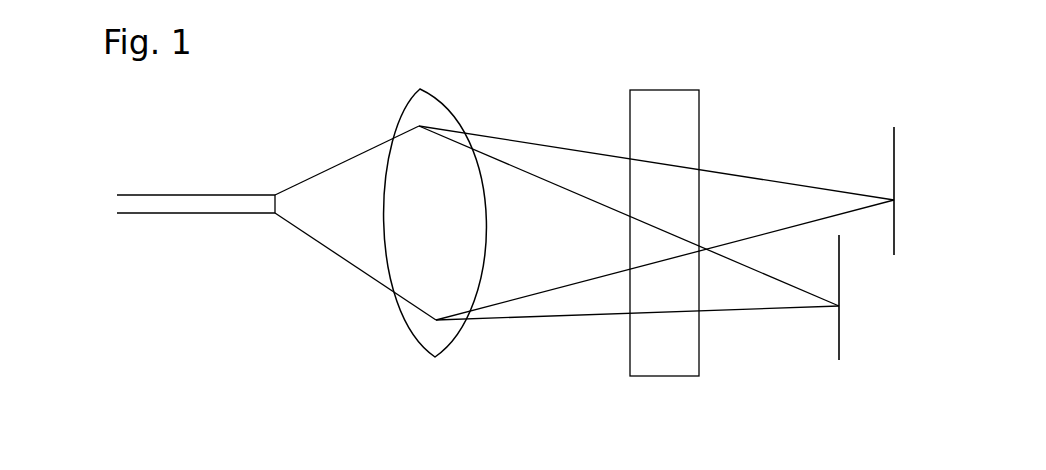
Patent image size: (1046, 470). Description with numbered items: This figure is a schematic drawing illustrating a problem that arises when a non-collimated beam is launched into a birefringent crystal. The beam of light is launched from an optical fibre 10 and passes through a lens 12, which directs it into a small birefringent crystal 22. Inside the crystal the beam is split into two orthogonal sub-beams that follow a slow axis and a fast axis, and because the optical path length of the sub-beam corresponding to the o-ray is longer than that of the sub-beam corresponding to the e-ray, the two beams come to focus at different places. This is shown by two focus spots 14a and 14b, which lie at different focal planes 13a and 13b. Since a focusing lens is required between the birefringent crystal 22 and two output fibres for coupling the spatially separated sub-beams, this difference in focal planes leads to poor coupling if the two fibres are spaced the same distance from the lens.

The optical fibre 10 is at (170, 203).
The lens 12 is at (416, 327).
The birefringent crystal 22 is at (660, 362).
The focus spot 14a is at (893, 198).
The focus spot 14b is at (836, 308).
The focal plane 13a is at (903, 233).
The focal plane 13b is at (847, 352).